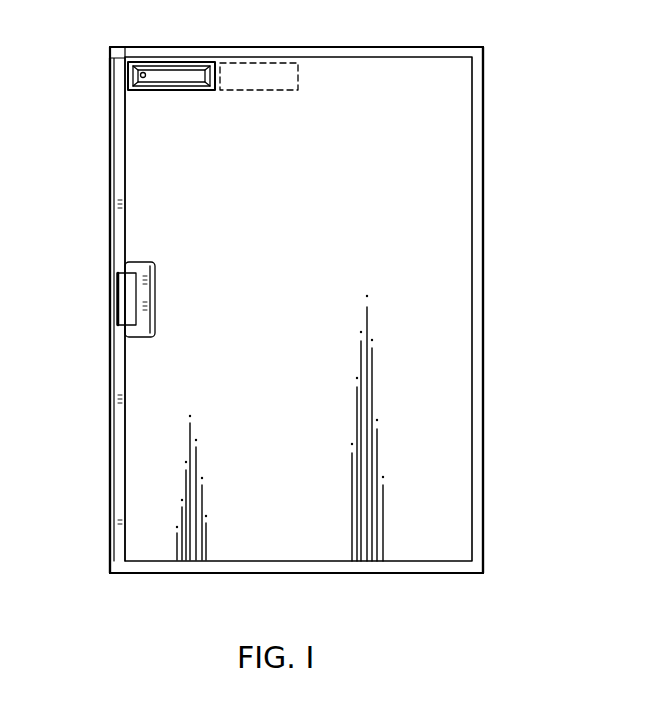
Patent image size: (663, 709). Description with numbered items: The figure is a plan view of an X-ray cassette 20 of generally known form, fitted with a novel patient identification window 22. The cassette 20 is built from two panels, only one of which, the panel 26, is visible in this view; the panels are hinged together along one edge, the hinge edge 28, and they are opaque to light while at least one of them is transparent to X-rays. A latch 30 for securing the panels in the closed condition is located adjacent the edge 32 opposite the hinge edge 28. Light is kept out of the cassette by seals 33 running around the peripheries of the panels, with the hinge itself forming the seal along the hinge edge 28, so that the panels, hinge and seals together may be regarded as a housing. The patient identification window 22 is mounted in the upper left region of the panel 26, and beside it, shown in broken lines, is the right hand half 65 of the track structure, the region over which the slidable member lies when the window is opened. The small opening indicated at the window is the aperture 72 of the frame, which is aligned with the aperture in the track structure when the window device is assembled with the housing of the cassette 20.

The cassette 20 is at (541, 142).
The patient identification window 22 is at (185, 75).
The panel 26 is at (332, 213).
The hinge edge 28 is at (484, 212).
The latch 30 is at (128, 300).
The edge 32 is at (110, 389).
The seals 33 is at (110, 150).
The right hand half of the track structure 65 is at (260, 73).
The aperture 72 is at (163, 95).